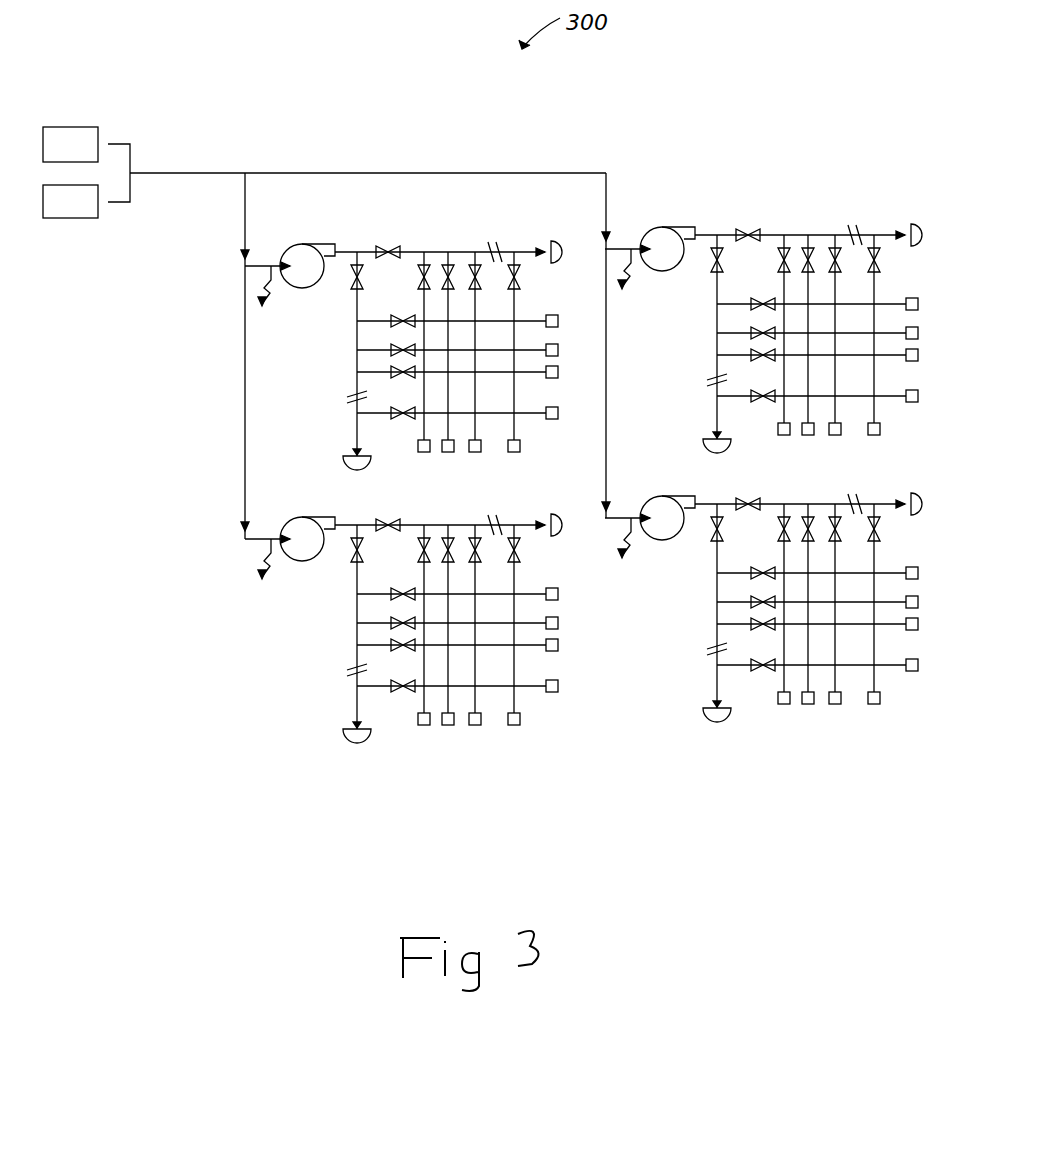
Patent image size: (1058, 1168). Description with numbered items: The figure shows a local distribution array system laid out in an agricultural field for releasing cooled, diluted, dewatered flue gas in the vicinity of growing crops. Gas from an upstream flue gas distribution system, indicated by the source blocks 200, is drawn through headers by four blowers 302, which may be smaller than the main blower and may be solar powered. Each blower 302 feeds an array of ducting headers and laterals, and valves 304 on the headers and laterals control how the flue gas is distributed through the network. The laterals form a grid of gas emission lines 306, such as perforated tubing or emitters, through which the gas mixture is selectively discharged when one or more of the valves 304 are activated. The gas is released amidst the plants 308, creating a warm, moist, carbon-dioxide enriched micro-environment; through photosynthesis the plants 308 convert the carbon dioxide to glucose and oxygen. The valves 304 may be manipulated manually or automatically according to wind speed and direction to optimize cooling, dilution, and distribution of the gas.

The water source 200 is at (86, 172).
The blower 302 is at (303, 243).
The valve 304 is at (389, 245).
The gas emission line 306 is at (410, 312).
The plant 308 is at (552, 388).